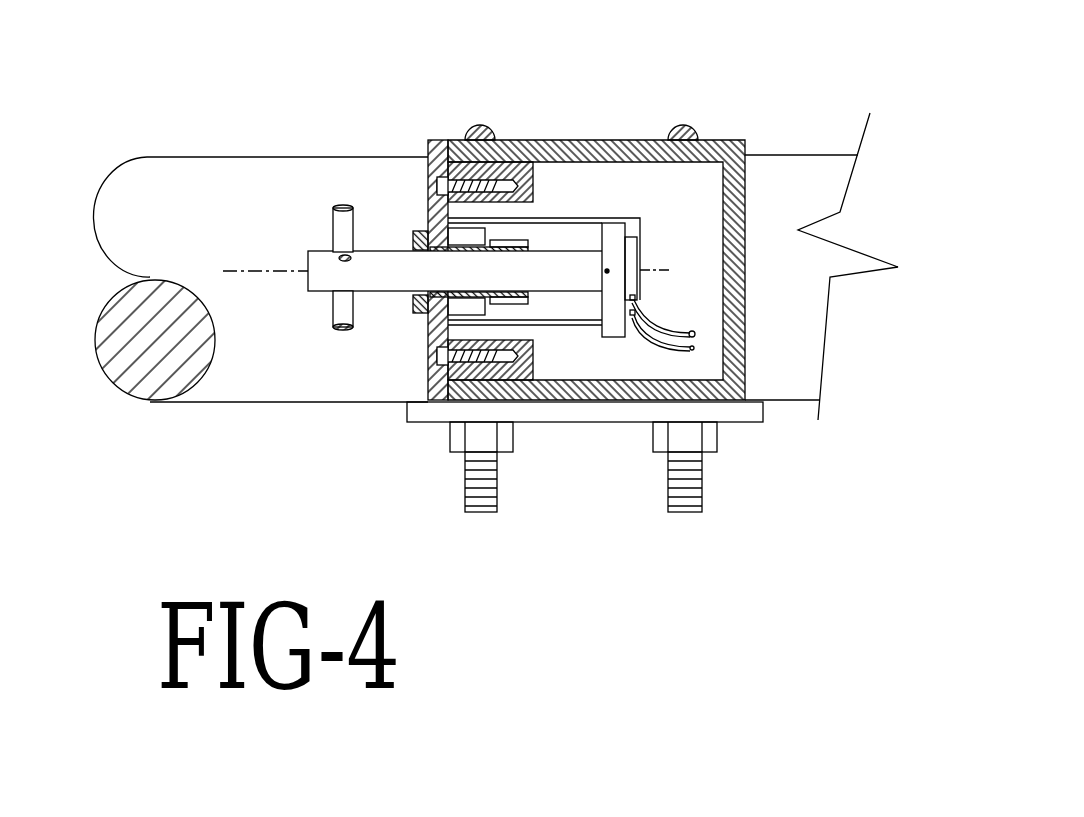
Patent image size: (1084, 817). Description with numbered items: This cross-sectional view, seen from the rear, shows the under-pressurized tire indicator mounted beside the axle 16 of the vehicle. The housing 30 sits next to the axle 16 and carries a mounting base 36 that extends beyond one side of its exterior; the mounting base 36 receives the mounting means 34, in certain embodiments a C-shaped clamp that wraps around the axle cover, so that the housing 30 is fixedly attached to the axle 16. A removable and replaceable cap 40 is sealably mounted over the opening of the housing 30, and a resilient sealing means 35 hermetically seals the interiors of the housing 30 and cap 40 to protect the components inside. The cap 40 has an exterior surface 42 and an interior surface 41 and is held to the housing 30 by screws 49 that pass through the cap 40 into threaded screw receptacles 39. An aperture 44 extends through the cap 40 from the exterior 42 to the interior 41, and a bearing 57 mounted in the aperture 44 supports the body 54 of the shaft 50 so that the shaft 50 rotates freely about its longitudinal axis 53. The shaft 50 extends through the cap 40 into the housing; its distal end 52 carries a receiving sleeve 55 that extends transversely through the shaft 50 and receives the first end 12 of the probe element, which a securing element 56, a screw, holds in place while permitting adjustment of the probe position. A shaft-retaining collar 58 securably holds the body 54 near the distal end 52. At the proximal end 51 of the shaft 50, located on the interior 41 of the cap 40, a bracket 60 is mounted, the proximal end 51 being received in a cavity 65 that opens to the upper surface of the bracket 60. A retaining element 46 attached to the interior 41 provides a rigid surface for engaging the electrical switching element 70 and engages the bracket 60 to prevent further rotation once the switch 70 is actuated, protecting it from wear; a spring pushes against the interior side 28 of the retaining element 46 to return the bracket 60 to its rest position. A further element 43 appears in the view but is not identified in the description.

The first end of the probe element 12 is at (326, 208).
The axle 16 is at (278, 390).
The interior side of retaining element 28 is at (568, 253).
The housing 30 is at (718, 138).
The mounting means 34 is at (478, 107).
The resilient sealing means 35 is at (455, 180).
The mounting base 36 is at (748, 413).
The threaded screw receptacles 39 is at (522, 173).
The cap 40 is at (407, 402).
The interior surface of the cap 41 is at (500, 224).
The exterior surface of the cap 42 is at (406, 186).
The bracket 43 is at (620, 193).
The aperture 44 is at (418, 240).
The retaining element 46 is at (617, 233).
The screws 49 is at (428, 180).
The shaft 50 is at (375, 288).
The proximal end of the shaft 51 is at (605, 271).
The distal end of the shaft 52 is at (291, 295).
The longitudinal axis of the shaft 53 is at (228, 258).
The body of the shaft 54 is at (435, 290).
The receiving sleeve 55 is at (341, 259).
The securing element 56 is at (343, 256).
The bearing 57 is at (478, 305).
The shaft-retaining collar 58 is at (412, 308).
The bracket 60 is at (640, 222).
The cavity 65 is at (610, 332).
The electrical switching element 70 is at (632, 280).